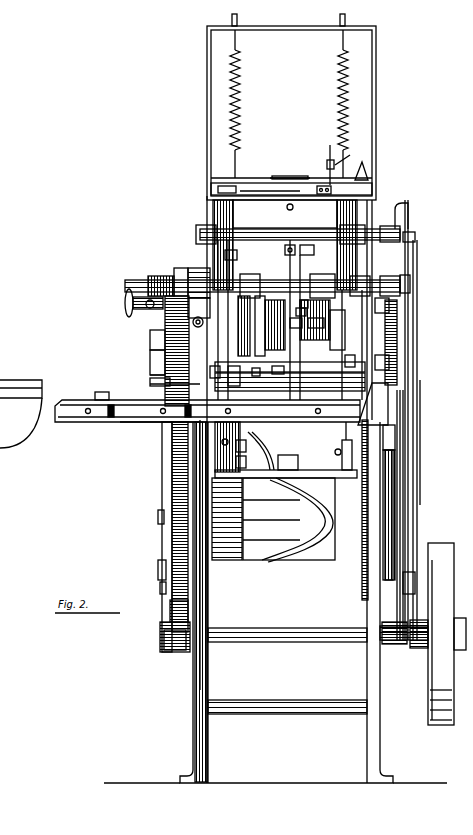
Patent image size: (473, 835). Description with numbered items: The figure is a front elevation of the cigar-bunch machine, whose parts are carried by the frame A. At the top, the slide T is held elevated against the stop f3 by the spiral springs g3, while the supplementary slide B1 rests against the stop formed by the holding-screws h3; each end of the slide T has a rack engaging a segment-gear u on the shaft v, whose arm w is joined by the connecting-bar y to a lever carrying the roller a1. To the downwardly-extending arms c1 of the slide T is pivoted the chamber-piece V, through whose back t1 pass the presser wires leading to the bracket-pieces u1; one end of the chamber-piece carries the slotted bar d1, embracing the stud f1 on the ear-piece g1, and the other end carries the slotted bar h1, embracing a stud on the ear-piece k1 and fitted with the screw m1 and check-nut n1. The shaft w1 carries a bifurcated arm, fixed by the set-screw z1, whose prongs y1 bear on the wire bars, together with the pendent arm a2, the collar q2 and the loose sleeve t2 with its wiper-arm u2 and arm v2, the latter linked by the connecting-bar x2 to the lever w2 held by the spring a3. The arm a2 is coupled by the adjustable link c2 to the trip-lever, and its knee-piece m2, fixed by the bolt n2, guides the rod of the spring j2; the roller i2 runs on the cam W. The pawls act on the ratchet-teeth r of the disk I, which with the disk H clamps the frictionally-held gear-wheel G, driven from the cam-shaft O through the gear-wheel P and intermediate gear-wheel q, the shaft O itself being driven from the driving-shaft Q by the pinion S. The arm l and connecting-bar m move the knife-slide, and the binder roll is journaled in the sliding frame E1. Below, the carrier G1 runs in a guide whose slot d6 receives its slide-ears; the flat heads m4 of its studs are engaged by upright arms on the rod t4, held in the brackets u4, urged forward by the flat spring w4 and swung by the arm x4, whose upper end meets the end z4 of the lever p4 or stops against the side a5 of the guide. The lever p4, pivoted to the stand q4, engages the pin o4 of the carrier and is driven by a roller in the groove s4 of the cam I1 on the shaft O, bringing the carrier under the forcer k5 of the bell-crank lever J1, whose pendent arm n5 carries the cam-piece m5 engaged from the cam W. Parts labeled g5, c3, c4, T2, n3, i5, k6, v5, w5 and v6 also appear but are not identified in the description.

The spiral springs g3 is at (238, 100).
The screw m1 is at (330, 149).
The block g5 is at (327, 164).
The check-nut n1 is at (349, 154).
The stop f3 is at (362, 165).
The supplementary slide B1 is at (292, 177).
The ear-piece k1 is at (331, 189).
The back of chamber-piece t1 is at (270, 192).
The slide T is at (285, 214).
The segment-gear u is at (213, 214).
The ear-piece g1 is at (258, 232).
The lever c3 is at (306, 245).
The arm w is at (394, 222).
The shaft v is at (410, 232).
The arm l is at (410, 242).
The arm v2 is at (410, 276).
The connecting-bar m is at (417, 345).
The wiper-arm u2 is at (296, 250).
The loose sleeve t2 is at (312, 280).
The collar q2 is at (156, 280).
The bolt n2 is at (178, 274).
The frictionally-held gear-wheel G is at (199, 272).
The spring a3 is at (196, 298).
The pin or stud f1 is at (231, 254).
The shaft w1 is at (249, 307).
The set-screw z1 is at (263, 311).
The disk I is at (144, 300).
The roller i2 is at (151, 306).
The pendent arm a2 is at (177, 351).
The roller c4 is at (198, 317).
The block T2 is at (153, 334).
The link c2 is at (160, 350).
The knee-piece m2 is at (153, 361).
The forcer k5 is at (150, 376).
The intermediate gear-wheel q is at (156, 384).
The holding-screws h3 is at (307, 299).
The slotted bar h1 is at (303, 309).
The bracket-pieces u1 is at (298, 322).
The flat spring w4 is at (320, 322).
The downwardly-extending arms c1 is at (385, 330).
The block n3 is at (354, 361).
The slotted bar d1 is at (290, 362).
The spring j2 is at (214, 369).
The sliding frame E1 is at (242, 375).
The pin i5 is at (258, 369).
The prongs y1 is at (280, 368).
The enlarged flat heads m4 is at (207, 411).
The slot d6 is at (72, 407).
The carrier G1 is at (102, 389).
The bar k6 is at (150, 422).
The end of lever z4 is at (227, 445).
The pin o4 is at (278, 447).
The block v5 is at (237, 447).
The block w5 is at (234, 461).
The lever p4 is at (261, 467).
The rod t4 is at (283, 462).
The stand q4 is at (306, 470).
The arm x4 is at (339, 446).
The brackets u4 is at (289, 601).
The cam I1 is at (289, 519).
The groove s4 is at (300, 505).
The cam-shaft O is at (227, 519).
The frame A is at (208, 568).
The bell-crank lever J1 is at (162, 470).
The pendent arm n5 is at (160, 545).
The cam-piece m5 is at (158, 518).
The cam W is at (158, 570).
The pin v6 is at (160, 586).
The gear-wheel P is at (170, 610).
The pinion S is at (160, 648).
The driving-shaft Q is at (290, 630).
The disk H is at (373, 404).
The side of carrier-guide a5 is at (391, 503).
The connecting-bar x2 is at (408, 408).
The connecting-bar y is at (402, 444).
The ratchet-teeth r is at (392, 465).
The lever w2 is at (447, 634).
The pin or roller a1 is at (404, 627).
The chamber-piece V is at (418, 625).